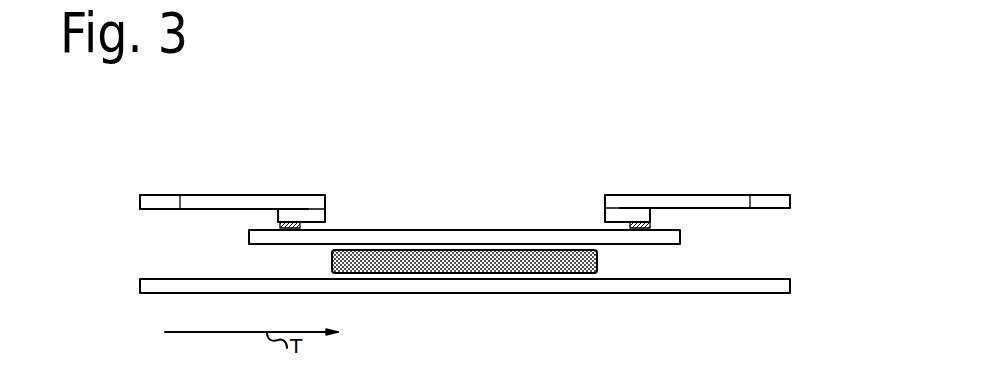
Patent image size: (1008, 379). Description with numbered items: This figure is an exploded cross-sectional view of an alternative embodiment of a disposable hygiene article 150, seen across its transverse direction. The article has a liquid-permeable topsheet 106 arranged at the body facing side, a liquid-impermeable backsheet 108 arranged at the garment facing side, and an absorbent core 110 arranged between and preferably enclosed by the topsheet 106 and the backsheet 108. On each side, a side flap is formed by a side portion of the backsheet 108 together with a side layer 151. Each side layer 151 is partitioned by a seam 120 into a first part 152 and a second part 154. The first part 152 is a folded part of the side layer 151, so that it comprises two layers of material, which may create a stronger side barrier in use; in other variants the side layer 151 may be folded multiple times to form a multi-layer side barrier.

The liquid-permeable topsheet 106 is at (443, 237).
The liquid-impermeable backsheet 108 is at (488, 285).
The absorbent core 110 is at (495, 258).
The seam 120 is at (282, 222).
The disposable hygiene article 150 is at (670, 132).
The side layer 151 is at (212, 195).
The first part 152 is at (312, 195).
The second part 154 is at (160, 195).